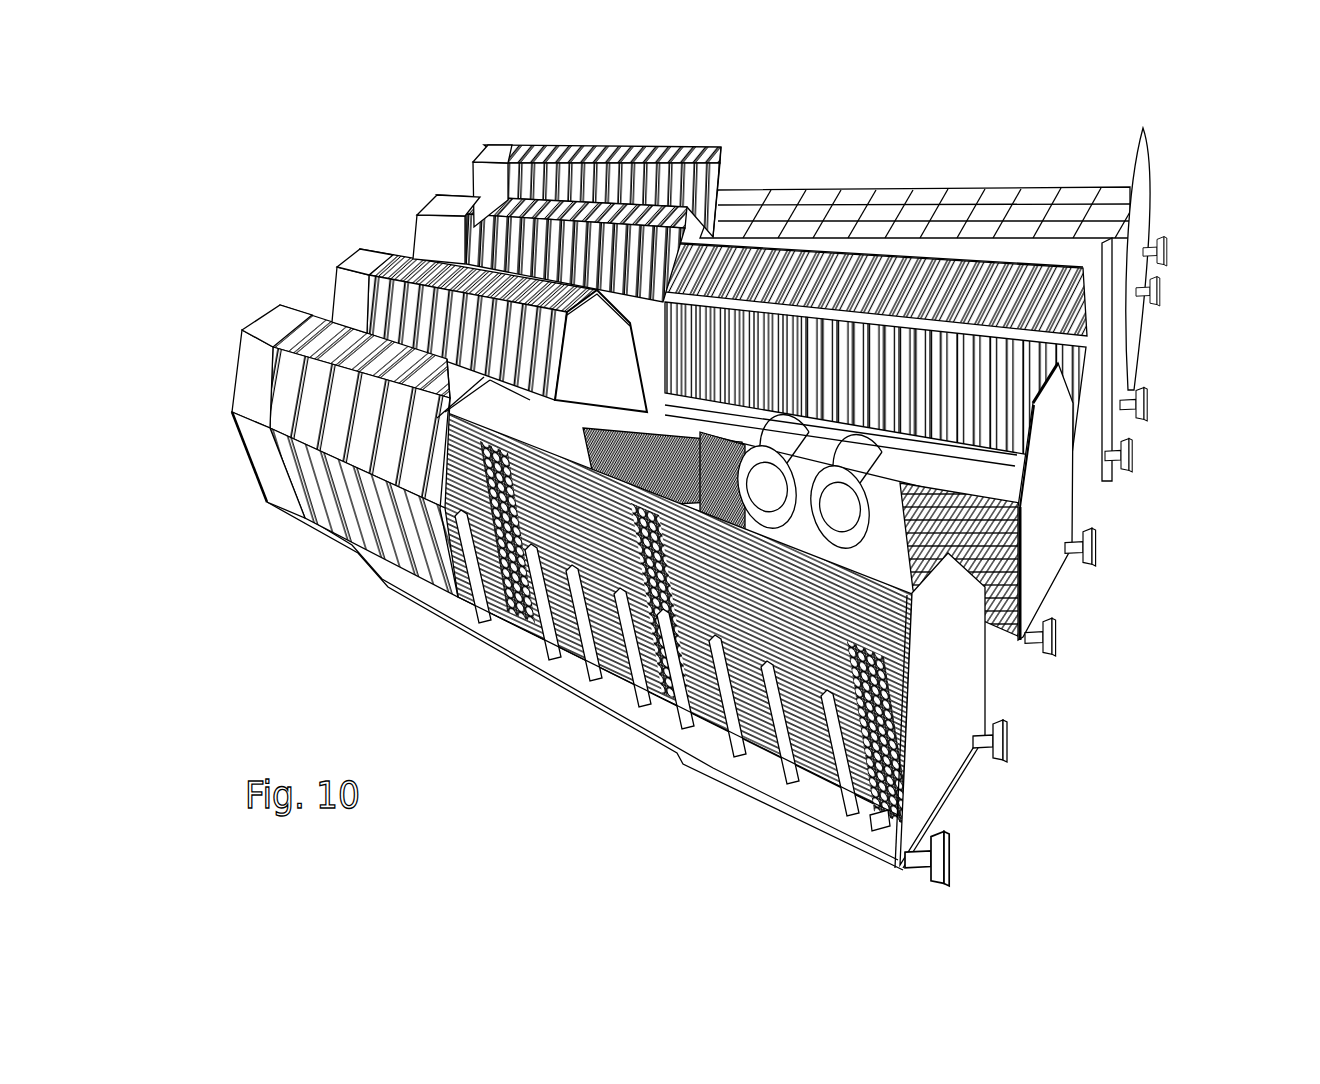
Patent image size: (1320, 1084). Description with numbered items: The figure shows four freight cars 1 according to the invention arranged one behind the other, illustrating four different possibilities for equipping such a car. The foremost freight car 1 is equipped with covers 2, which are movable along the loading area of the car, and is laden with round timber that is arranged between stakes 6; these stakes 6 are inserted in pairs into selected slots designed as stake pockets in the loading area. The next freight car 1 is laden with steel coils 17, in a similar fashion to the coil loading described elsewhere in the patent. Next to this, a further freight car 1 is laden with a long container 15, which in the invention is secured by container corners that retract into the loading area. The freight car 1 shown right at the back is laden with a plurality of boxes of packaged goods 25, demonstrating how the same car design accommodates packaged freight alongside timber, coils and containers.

The freight car 1 is at (447, 150).
The covers 2 is at (488, 183).
The stakes 6 is at (783, 747).
The container 15 is at (1012, 300).
The steel coils 17 is at (867, 465).
The boxes of packaged goods 25 is at (776, 210).